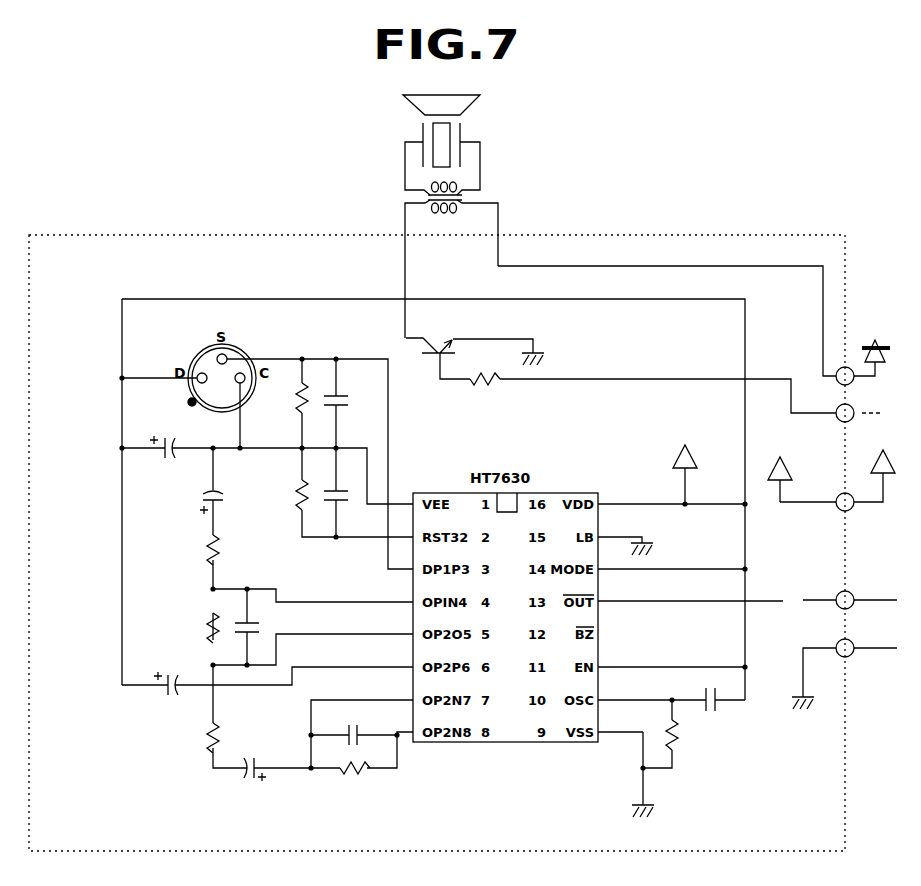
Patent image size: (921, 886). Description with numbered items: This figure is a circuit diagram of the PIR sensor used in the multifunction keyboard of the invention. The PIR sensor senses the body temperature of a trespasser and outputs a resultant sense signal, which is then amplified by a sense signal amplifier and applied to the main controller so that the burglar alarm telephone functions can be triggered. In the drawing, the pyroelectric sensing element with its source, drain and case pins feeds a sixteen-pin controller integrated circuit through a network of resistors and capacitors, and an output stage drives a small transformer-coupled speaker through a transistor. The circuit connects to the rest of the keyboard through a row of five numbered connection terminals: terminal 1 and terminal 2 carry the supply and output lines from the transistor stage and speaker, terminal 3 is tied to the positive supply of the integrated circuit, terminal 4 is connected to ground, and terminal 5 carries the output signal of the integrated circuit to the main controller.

The connector terminal 1 is at (850, 419).
The connector terminal 2 is at (850, 382).
The connector terminal 3 is at (850, 507).
The connector terminal 4 is at (850, 654).
The connector terminal 5 is at (850, 605).